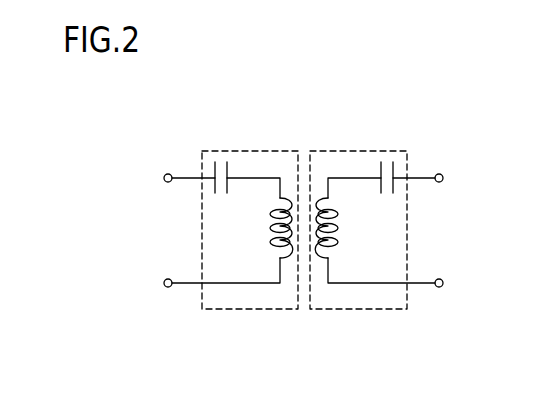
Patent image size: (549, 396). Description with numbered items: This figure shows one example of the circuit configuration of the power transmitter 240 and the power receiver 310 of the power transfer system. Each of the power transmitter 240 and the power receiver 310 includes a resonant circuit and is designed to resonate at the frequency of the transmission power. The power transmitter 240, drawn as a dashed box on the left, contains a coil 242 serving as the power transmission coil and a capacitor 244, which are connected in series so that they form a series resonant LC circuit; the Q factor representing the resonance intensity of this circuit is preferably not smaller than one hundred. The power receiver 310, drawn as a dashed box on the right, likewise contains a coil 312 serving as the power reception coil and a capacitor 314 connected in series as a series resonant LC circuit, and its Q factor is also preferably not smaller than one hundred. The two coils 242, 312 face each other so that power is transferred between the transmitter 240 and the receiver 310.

The power transmitter 240 is at (275, 151).
The coil 242 is at (268, 247).
The capacitor 244 is at (228, 168).
The power receiver 310 is at (333, 151).
The coil 312 is at (340, 247).
The capacitor 314 is at (380, 168).